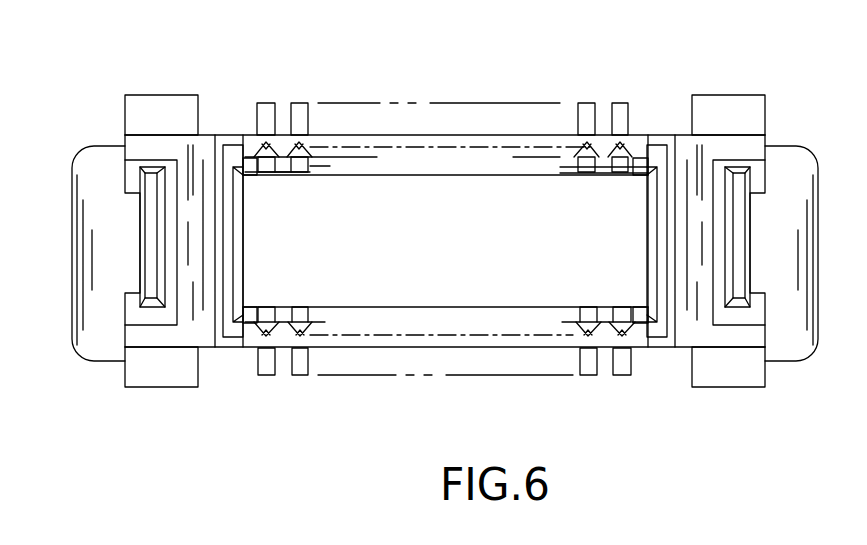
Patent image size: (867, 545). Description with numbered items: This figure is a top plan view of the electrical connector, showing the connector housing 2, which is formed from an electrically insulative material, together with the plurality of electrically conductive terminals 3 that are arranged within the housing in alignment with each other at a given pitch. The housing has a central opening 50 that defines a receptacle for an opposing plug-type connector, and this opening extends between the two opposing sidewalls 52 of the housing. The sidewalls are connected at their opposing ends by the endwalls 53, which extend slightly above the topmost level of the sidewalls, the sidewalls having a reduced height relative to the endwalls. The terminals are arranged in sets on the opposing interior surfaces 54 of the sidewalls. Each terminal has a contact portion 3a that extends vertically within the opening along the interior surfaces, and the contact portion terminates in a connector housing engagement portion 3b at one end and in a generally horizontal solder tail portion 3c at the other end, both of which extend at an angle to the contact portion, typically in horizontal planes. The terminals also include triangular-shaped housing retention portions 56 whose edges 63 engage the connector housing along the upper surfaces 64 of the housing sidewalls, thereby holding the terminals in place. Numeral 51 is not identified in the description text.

The connector housing 2 is at (752, 145).
The terminals 3 is at (266, 174).
The contact portions 3a is at (591, 176).
The connector housing engagement portions 3b is at (300, 157).
The solder tail portions 3c is at (296, 105).
The central opening 50 is at (475, 244).
The lower housing wall 51 is at (490, 283).
The sidewalls 52 is at (556, 135).
The endwalls 53 is at (216, 228).
The interior surfaces 54 is at (282, 176).
The housing retention portions 56 is at (258, 152).
The edges 63 is at (646, 148).
The upper surfaces 64 is at (283, 323).